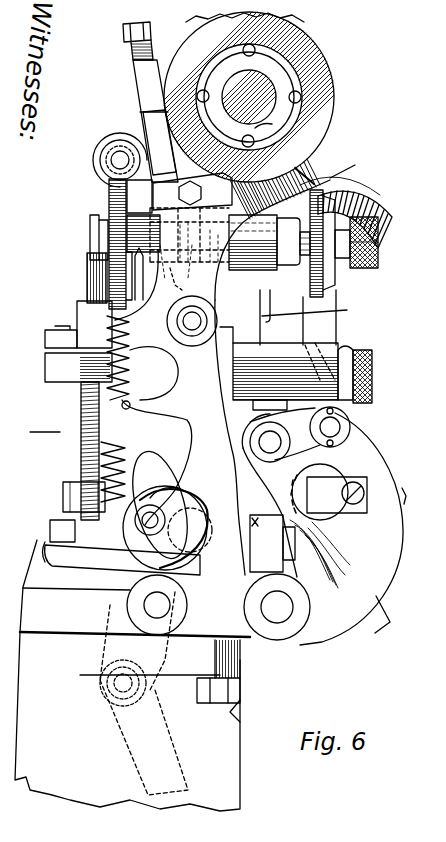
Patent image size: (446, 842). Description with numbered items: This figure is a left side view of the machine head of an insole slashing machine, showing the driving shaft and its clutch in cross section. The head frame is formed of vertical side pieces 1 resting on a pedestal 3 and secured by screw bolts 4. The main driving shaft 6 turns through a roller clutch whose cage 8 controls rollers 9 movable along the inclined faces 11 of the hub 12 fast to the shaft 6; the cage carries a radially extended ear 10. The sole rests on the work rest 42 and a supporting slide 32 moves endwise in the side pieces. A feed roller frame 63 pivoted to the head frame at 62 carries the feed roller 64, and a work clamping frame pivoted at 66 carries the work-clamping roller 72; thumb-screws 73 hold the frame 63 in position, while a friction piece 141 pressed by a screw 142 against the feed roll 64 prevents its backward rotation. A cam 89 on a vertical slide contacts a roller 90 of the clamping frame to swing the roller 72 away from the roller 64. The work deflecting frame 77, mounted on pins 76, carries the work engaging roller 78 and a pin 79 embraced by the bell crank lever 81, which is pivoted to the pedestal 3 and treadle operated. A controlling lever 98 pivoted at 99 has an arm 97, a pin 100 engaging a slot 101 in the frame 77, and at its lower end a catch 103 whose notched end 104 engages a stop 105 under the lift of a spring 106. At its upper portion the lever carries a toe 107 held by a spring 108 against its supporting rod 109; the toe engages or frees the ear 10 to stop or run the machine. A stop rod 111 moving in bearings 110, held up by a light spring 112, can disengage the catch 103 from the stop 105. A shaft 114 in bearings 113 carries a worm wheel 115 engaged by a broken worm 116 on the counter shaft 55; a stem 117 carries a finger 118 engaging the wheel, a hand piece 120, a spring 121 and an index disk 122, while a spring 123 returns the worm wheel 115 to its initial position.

The vertical side pieces 1 is at (194, 365).
The pedestal 3 is at (132, 675).
The screw bolts 4 is at (240, 692).
The main driving shaft 6 is at (262, 90).
The cage 8 is at (280, 62).
The rollers 9 is at (300, 97).
The ear 10 is at (150, 110).
The inclined faces 11 is at (258, 124).
The hub 12 is at (228, 75).
The supporting slide 32 is at (178, 460).
The work rest 42 is at (272, 543).
The counter shaft 55 is at (120, 160).
The pivot 62 is at (285, 616).
The feed roller frame 63 is at (378, 562).
The feed roller 64 is at (310, 468).
The pivot 66 is at (335, 430).
The work-clamping roller 72 is at (320, 460).
The thumb-screws 73 is at (372, 363).
The pins 76 is at (160, 605).
The work deflecting or bending frame 77 is at (100, 612).
The work engaging roller 78 is at (210, 545).
The pin 79 is at (110, 700).
The bell crank lever 81 is at (165, 752).
The cam 89 is at (300, 340).
The roller 90 is at (346, 348).
The arm 97 is at (382, 206).
The controlling lever 98 is at (155, 387).
The pivot 99 is at (190, 326).
The pin 100 is at (150, 525).
The slot 101 is at (160, 503).
The catch 103 is at (92, 570).
The notched end 104 is at (48, 544).
The stop 105 is at (50, 525).
The spring 106 is at (110, 445).
The toe 107 is at (146, 97).
The spring 108 is at (135, 55).
The supporting rod 109 is at (124, 33).
The bearings 110 is at (65, 492).
The stop rod 111 is at (83, 388).
The spring 112 is at (83, 410).
The bearings 113 is at (270, 255).
The shaft 114 is at (213, 253).
The worm wheel 115 is at (110, 190).
The broken worm 116 is at (102, 147).
The stem 117 is at (343, 262).
The finger 118 is at (90, 232).
The hand piece 120 is at (378, 262).
The spring 121 is at (365, 242).
The disk 122 is at (318, 176).
The spring 123 is at (183, 279).
The friction piece 141 is at (375, 520).
The screw 142 is at (356, 492).